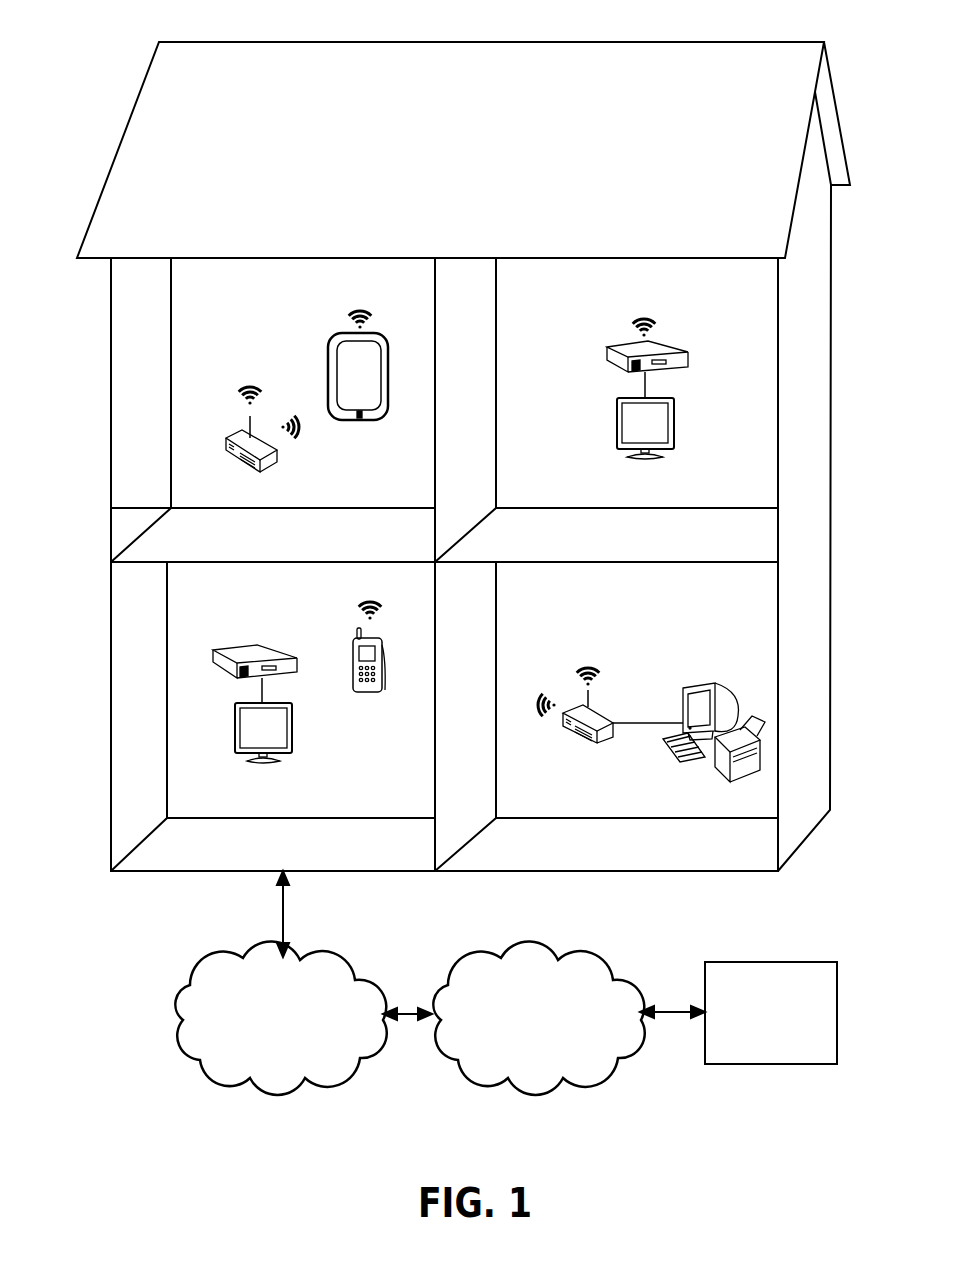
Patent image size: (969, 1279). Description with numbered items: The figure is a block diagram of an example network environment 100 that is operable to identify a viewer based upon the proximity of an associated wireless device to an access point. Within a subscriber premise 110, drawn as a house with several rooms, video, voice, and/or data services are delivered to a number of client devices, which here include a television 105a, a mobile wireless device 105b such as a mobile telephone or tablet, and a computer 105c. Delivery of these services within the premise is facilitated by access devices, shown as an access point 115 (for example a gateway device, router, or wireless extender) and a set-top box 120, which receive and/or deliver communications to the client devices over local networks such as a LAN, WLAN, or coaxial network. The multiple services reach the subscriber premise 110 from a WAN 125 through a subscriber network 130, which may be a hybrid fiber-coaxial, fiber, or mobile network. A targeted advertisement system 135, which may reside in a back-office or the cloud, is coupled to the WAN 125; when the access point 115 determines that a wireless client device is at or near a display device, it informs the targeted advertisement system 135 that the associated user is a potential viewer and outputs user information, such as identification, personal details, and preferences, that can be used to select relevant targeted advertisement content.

The network environment 100 is at (109, 1081).
The television 105a is at (645, 458).
The mobile wireless device 105b is at (375, 333).
The computer 105c is at (693, 686).
The subscriber premise 110 is at (220, 40).
The access point 115 is at (238, 462).
The set-top box 120 is at (667, 347).
The WAN 125 is at (548, 1081).
The subscriber network 130 is at (288, 1082).
The targeted advertisement system 135 is at (752, 1066).